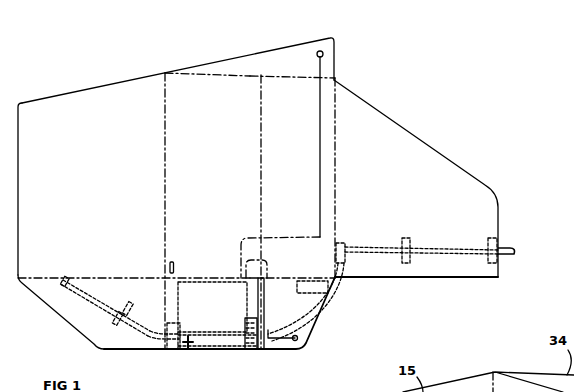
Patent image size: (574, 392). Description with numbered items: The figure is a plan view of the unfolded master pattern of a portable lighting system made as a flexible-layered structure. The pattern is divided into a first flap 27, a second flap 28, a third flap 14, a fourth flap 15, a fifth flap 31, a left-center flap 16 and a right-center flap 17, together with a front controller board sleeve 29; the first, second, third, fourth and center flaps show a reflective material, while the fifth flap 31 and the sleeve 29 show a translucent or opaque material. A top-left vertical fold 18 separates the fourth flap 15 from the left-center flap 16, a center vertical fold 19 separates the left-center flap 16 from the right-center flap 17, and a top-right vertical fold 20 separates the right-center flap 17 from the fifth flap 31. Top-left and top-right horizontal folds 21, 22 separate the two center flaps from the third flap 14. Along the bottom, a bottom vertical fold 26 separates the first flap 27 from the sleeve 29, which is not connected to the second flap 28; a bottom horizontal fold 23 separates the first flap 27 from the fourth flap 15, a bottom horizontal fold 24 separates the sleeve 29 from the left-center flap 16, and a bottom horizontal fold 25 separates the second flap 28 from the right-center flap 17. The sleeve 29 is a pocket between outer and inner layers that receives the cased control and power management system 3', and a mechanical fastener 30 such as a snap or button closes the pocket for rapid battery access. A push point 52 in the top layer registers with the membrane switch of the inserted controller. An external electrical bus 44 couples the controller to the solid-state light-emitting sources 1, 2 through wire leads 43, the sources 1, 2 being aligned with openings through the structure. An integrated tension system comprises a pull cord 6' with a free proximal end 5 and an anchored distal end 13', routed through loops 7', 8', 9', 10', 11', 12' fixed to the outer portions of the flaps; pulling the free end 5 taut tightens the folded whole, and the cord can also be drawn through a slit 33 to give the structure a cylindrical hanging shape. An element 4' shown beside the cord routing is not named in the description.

The solid-state light-emitting source 1 is at (335, 42).
The solid-state light-emitting source 2 is at (302, 348).
The control and power management system 3' is at (217, 351).
The connector 4' is at (328, 295).
The free proximal end of pull cord 5 is at (518, 250).
The pull cord 6' is at (417, 244).
The drawstring loop 7' is at (515, 269).
The drawstring loop 8' is at (429, 269).
The drawstring loop 9' is at (416, 287).
The drawstring loop 10' is at (234, 323).
The drawstring loop 11' is at (167, 349).
The drawstring loop 12' is at (106, 308).
The anchored distal end of pull cord 13' is at (50, 271).
The third flap 14 is at (252, 70).
The fourth flap 15 is at (97, 107).
The left-center flap 16 is at (225, 166).
The right-center flap 17 is at (312, 166).
The top-left vertical fold 18 is at (162, 215).
The center vertical fold 19 is at (259, 214).
The top-right vertical fold 20 is at (333, 214).
The top-left horizontal fold 21 is at (234, 73).
The top-right horizontal fold 22 is at (307, 80).
The bottom horizontal fold 23 is at (140, 277).
The bottom horizontal fold 24 is at (243, 268).
The bottom horizontal fold 25 is at (315, 278).
The bottom vertical fold 26 is at (160, 340).
The first flap 27 is at (67, 310).
The second flap 28 is at (308, 313).
The front controller board sleeve 29 is at (205, 325).
The mechanical fastener 30 is at (260, 349).
The fifth flap 31 is at (408, 143).
The slit 33 is at (168, 264).
The wire leads 43 is at (322, 181).
The external electrical bus 44 is at (273, 283).
The push point 52 is at (188, 345).